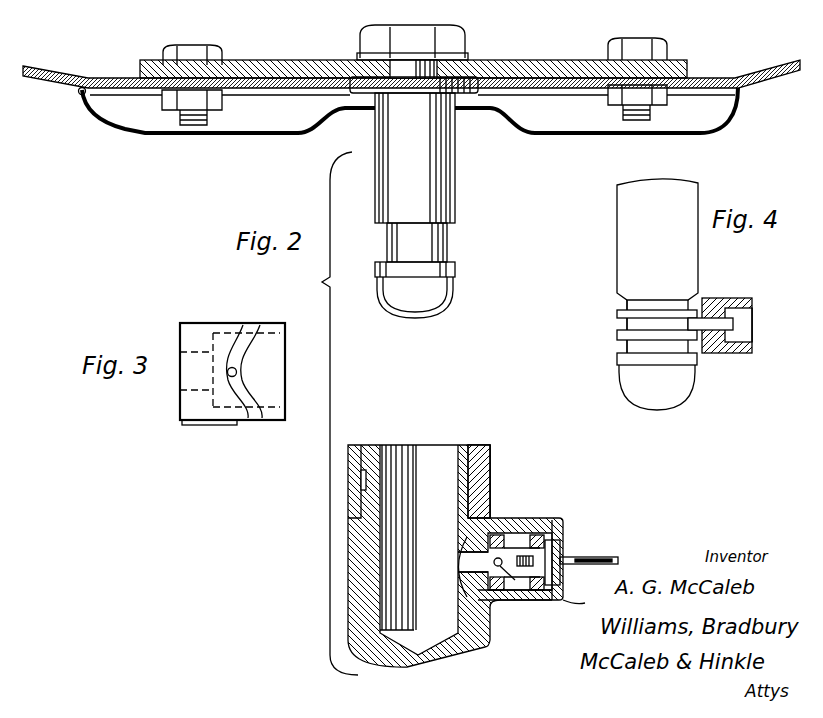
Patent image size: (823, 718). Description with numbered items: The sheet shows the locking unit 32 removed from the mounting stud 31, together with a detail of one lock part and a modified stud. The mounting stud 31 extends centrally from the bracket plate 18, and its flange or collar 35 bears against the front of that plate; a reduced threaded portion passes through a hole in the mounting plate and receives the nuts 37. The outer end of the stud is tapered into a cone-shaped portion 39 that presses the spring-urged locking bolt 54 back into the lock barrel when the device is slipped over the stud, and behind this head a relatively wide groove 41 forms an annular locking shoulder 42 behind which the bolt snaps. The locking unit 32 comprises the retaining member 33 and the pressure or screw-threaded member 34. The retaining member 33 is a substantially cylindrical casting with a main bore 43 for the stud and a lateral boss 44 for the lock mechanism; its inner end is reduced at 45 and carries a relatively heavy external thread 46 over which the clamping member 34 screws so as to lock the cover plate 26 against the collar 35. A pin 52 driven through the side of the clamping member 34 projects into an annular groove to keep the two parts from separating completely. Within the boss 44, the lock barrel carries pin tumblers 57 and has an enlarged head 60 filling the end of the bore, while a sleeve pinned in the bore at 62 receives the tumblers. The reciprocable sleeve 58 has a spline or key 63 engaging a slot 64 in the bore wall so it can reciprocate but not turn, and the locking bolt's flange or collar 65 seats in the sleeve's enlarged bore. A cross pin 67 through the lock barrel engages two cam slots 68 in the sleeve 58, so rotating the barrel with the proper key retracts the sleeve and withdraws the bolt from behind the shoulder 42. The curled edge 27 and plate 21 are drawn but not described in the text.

In FIG. 2, the bracket plate 18 is at (690, 60).
In FIG. 2, the supporting plate 21 is at (773, 62).
In FIG. 2, the cover plate 26 is at (638, 136).
In FIG. 2, the curled edge 27 is at (80, 93).
In FIG. 2, the mounting stud 31 is at (445, 163).
In FIG. 4, the mounting stud 31 is at (622, 237).
In FIG. 2, the locking unit 32 is at (458, 442).
In FIG. 2, the retaining member 33 is at (490, 625).
In FIG. 2, the pressure or screw-threaded member 34 is at (495, 460).
In FIG. 2, the flange or collar 35 is at (355, 92).
In FIG. 2, the nuts 37 is at (360, 40).
In FIG. 2, the cone-shaped portion 39 is at (450, 293).
In FIG. 4, the cone-shaped portion 39 is at (657, 387).
In FIG. 2, the groove 41 is at (448, 243).
In FIG. 2, the annular locking shoulder 42 is at (455, 265).
In FIG. 2, the main bore 43 is at (407, 537).
In FIG. 2, the lateral protuberance or boss 44 is at (583, 610).
In FIG. 2, the reduced portion 45 is at (386, 478).
In FIG. 2, the external thread 46 is at (374, 447).
In FIG. 2, the pin 52 is at (492, 495).
In FIG. 2, the locking bolt 54 is at (470, 562).
In FIG. 2, the pin tumblers 57 is at (540, 563).
In FIG. 2, the reciprocable sleeve 58 is at (500, 530).
In FIG. 3, the reciprocable sleeve 58 is at (240, 323).
In FIG. 2, the enlarged head 60 is at (560, 548).
In FIG. 2, the pin 62 is at (562, 530).
In FIG. 2, the spline or key 63 is at (472, 586).
In FIG. 3, the spline or key 63 is at (188, 428).
In FIG. 2, the slot 64 is at (470, 594).
In FIG. 2, the flange or collar 65 is at (460, 542).
In FIG. 2, the pin 67 is at (562, 518).
In FIG. 3, the pin 67 is at (237, 373).
In FIG. 3, the cam slots 68 is at (240, 355).